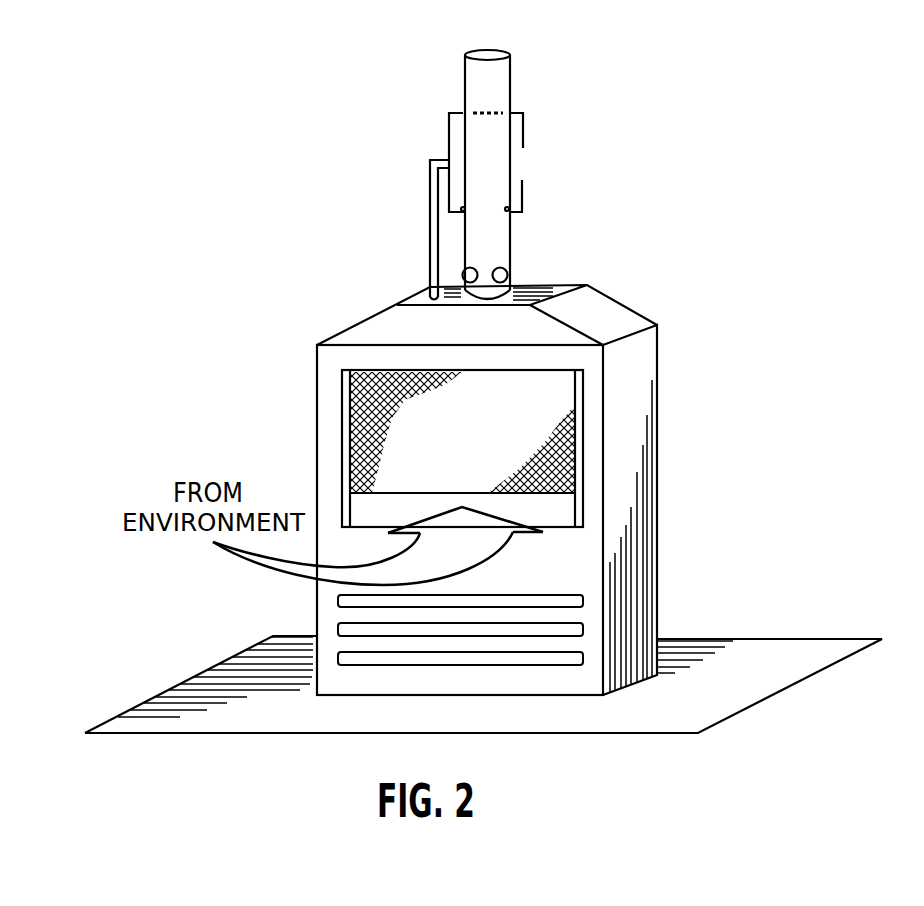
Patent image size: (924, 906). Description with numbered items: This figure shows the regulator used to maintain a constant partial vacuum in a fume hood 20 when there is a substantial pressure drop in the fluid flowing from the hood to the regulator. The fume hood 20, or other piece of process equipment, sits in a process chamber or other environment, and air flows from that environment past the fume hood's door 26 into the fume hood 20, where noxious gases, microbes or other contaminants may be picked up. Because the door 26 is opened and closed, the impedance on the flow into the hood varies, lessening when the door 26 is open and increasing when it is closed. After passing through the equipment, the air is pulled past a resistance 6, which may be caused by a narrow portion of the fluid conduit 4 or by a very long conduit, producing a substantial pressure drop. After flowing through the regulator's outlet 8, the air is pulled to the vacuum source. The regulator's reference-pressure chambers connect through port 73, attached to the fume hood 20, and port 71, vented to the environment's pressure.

The fluid conduit 4 is at (510, 236).
The resistance 6 is at (510, 268).
The regulator's outlet 8 is at (510, 82).
The fume hood 20 is at (633, 415).
The fume hood's door 26 is at (347, 403).
The port 71 is at (523, 148).
The port 73 is at (430, 205).